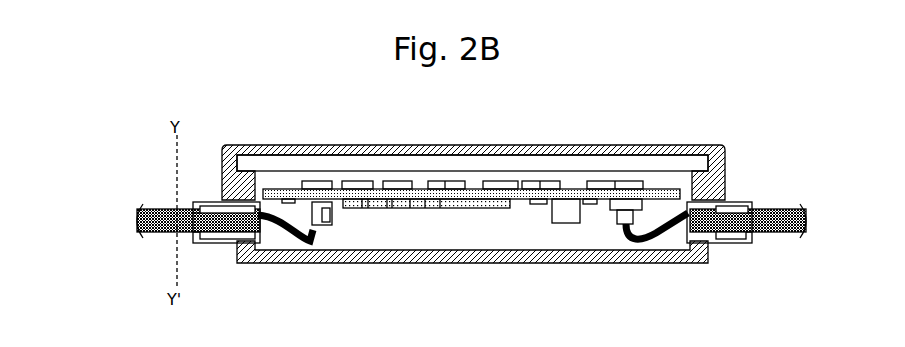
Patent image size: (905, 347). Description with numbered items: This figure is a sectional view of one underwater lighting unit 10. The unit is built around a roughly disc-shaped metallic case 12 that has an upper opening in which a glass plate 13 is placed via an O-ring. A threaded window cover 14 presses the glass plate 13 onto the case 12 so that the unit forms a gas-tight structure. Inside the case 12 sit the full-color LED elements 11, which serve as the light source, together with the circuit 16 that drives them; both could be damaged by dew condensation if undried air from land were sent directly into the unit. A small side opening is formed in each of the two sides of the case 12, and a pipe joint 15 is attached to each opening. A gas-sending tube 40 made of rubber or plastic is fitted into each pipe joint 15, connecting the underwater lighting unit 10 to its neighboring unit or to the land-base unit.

The underwater lighting unit 10 is at (283, 119).
The LED element 11 is at (544, 184).
The case 12 is at (380, 263).
The glass plate 13 is at (503, 162).
The window cover 14 is at (725, 145).
The pipe joint 15 is at (732, 244).
The circuit 16 is at (462, 208).
The gas-sending tube 40 is at (773, 209).